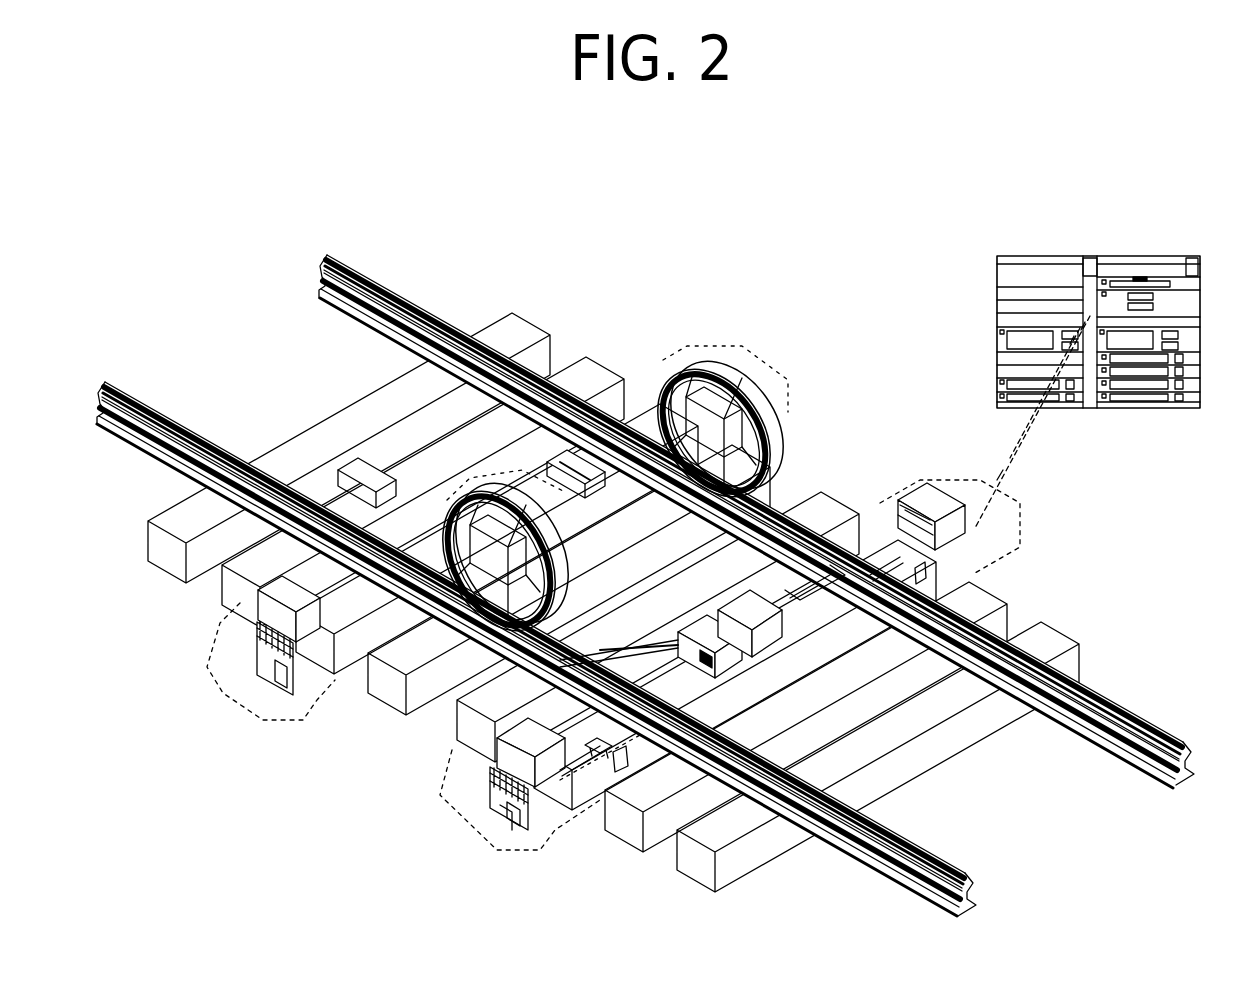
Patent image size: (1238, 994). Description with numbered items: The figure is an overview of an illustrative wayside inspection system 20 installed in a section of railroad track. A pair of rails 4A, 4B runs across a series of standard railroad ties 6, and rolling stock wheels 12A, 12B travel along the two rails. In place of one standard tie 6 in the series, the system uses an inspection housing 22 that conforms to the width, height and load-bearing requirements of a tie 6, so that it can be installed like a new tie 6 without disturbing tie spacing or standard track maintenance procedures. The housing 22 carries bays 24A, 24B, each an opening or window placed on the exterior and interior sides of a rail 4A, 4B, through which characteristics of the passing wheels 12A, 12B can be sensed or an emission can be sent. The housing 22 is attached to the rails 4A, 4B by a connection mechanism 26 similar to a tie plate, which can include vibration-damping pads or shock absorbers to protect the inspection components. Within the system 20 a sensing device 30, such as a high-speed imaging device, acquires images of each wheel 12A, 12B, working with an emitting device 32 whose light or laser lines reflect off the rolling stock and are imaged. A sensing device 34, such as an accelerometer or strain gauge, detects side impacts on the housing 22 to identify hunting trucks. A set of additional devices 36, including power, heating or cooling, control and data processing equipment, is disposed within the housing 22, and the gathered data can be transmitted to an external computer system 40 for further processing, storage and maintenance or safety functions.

The wayside inspection system 20 is at (500, 219).
The rail 4A is at (102, 388).
The rail 4B is at (326, 260).
The railroad tie 6 is at (160, 545).
The wheel 12A is at (556, 531).
The wheel 12B is at (787, 453).
The inspection housing 22 is at (311, 684).
The bay 24A is at (505, 757).
The bay 24B is at (697, 628).
The connection mechanism 26 is at (600, 742).
The sensing device 30 is at (677, 651).
The emitting device 32 is at (710, 657).
The sensing device 34 is at (618, 762).
The set of additional devices 36 is at (491, 813).
The external computer system 40 is at (1089, 255).